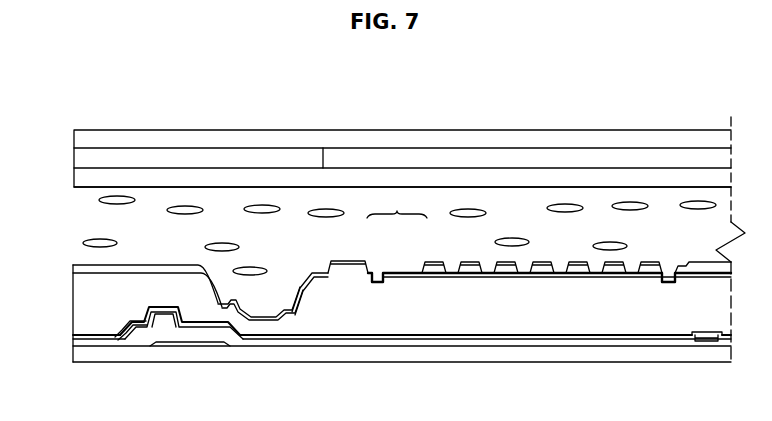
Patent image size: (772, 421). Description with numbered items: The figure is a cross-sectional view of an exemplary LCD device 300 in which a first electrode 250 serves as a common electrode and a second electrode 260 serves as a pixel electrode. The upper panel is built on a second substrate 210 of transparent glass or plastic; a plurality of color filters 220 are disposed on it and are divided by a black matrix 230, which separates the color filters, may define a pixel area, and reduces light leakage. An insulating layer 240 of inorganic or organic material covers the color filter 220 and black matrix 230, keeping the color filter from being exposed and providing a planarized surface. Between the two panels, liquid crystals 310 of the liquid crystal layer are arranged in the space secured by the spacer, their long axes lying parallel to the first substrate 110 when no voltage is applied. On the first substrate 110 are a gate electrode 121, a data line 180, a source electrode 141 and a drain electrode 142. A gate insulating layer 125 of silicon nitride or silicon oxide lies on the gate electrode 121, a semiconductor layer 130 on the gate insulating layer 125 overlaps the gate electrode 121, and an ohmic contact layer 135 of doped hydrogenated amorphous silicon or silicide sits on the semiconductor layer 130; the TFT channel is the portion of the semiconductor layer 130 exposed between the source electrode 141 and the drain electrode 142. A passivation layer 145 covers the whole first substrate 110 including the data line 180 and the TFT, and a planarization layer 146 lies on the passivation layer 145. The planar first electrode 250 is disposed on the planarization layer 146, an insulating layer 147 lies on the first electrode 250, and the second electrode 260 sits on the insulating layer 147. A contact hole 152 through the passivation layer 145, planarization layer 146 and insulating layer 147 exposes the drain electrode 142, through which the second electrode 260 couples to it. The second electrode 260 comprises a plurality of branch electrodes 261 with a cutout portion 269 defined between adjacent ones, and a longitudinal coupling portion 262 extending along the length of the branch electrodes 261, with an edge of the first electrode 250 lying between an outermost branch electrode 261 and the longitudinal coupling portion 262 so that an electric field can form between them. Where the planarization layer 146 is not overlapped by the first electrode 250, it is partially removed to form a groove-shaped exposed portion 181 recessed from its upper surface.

The LCD device 300 is at (54, 114).
The second substrate 210 is at (350, 141).
The color filter 220 is at (400, 157).
The black matrix 230 is at (230, 160).
The insulating layer 240 is at (497, 177).
The liquid crystal 310 is at (632, 204).
The second electrode 260 is at (397, 205).
The branch electrode 261 is at (470, 261).
The longitudinal coupling portion 262 is at (357, 261).
The cutout portion 269 is at (562, 266).
The exposed portion 181 is at (377, 256).
The first electrode 250 is at (538, 278).
The planarization layer 146 is at (86, 308).
The insulating layer 147 is at (88, 266).
The passivation layer 145 is at (120, 335).
The source electrode 141 is at (140, 312).
The contact hole 152 is at (259, 312).
The drain electrode 142 is at (253, 331).
The semiconductor layer 130 is at (281, 337).
The gate insulating layer 125 is at (208, 338).
The gate electrode 121 is at (177, 342).
The ohmic contact layer 135 is at (140, 340).
The first substrate 110 is at (93, 353).
The data line 180 is at (708, 341).